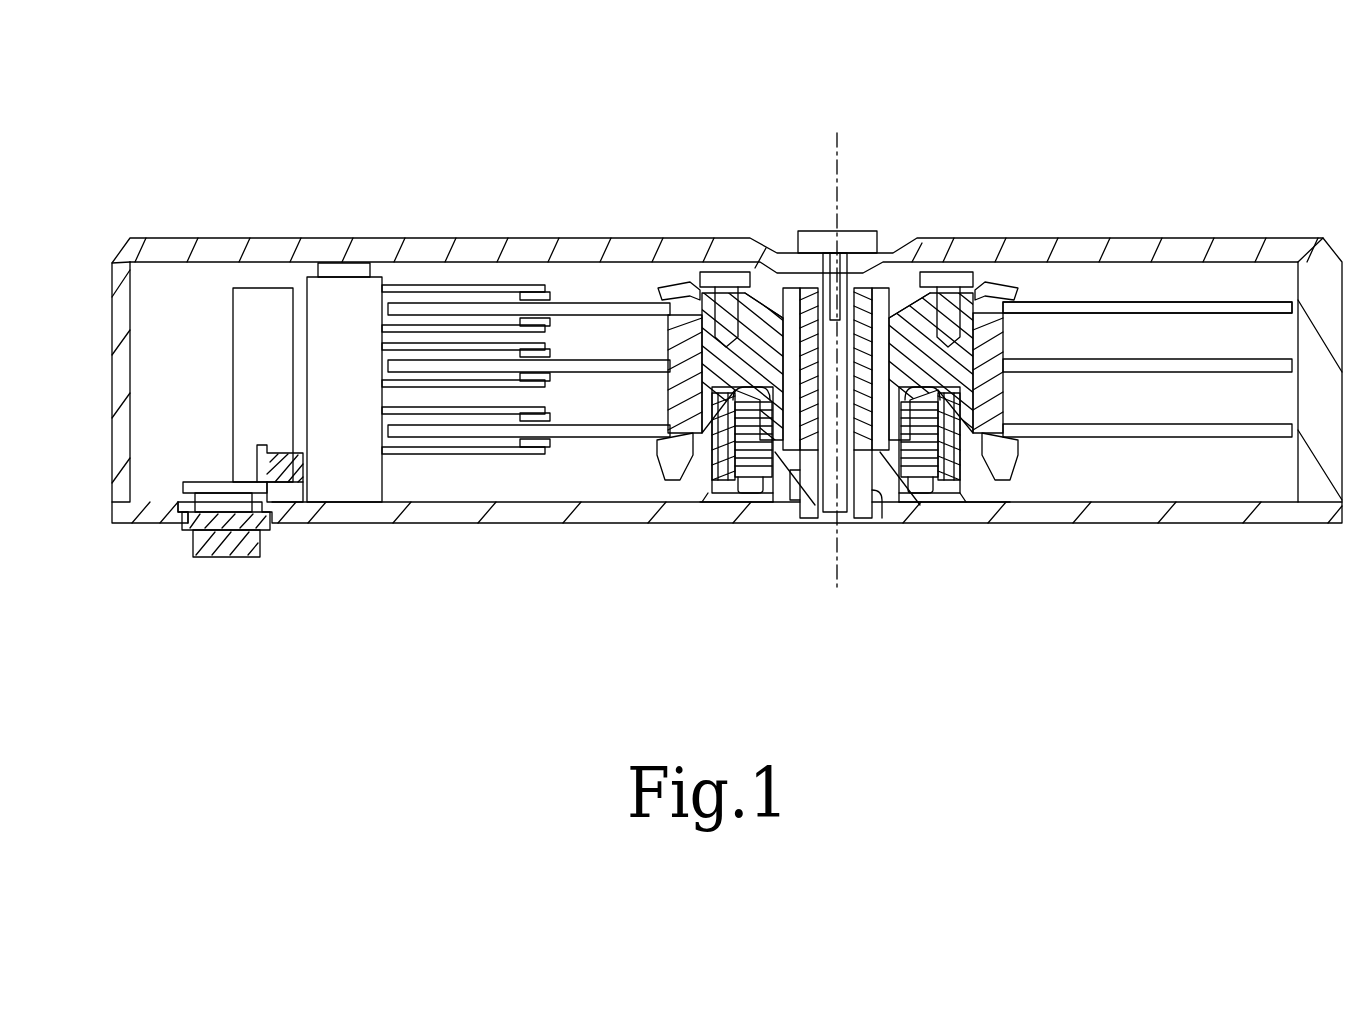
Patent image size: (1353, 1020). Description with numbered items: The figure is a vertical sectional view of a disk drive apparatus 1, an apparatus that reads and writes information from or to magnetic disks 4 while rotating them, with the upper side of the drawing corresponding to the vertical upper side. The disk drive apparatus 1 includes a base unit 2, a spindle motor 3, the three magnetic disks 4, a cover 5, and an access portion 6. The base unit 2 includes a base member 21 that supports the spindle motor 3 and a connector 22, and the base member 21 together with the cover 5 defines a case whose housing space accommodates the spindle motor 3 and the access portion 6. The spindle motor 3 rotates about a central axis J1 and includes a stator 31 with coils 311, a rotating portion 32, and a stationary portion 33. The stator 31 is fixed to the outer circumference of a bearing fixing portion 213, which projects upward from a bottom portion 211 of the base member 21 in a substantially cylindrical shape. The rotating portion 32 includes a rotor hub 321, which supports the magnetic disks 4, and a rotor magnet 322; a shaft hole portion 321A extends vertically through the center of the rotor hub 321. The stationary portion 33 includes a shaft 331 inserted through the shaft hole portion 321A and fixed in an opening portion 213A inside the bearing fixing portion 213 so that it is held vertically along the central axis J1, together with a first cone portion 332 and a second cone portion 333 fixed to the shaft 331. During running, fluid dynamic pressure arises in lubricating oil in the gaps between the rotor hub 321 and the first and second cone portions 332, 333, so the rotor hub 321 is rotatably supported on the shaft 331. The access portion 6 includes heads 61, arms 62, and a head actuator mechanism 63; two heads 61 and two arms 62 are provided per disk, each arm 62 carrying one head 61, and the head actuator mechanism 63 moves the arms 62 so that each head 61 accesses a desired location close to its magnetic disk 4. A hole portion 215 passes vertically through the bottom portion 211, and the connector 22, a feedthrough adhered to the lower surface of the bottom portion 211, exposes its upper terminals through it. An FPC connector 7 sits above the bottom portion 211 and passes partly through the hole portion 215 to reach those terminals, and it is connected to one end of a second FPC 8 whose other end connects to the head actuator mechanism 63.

The disk drive apparatus 1 is at (404, 108).
The base unit 2 is at (1187, 552).
The spindle motor 3 is at (973, 484).
The magnetic disks 4 is at (1222, 302).
The cover 5 is at (193, 240).
The access portion 6 is at (430, 266).
The FPC connector 7 is at (200, 488).
The second FPC 8 is at (285, 447).
The base member 21 is at (1235, 523).
The connector 22 is at (255, 557).
The stator 31 is at (727, 497).
The rotating portion 32 is at (665, 285).
The stationary portion 33 is at (797, 258).
The heads 61 is at (555, 300).
The arms 62 is at (473, 285).
The head actuator mechanism 63 is at (276, 288).
The bottom portion 211 is at (1037, 523).
The bearing fixing portion 213 is at (910, 512).
The opening portion 213A is at (871, 522).
The hole portion 215 is at (186, 528).
The coils 311 is at (760, 480).
The rotor hub 321 is at (712, 272).
The shaft hole portion 321A is at (930, 330).
The rotor magnet 322 is at (720, 482).
The shaft 331 is at (884, 330).
The first cone portion 332 is at (866, 292).
The second cone portion 333 is at (810, 520).
The central axis J1 is at (838, 145).